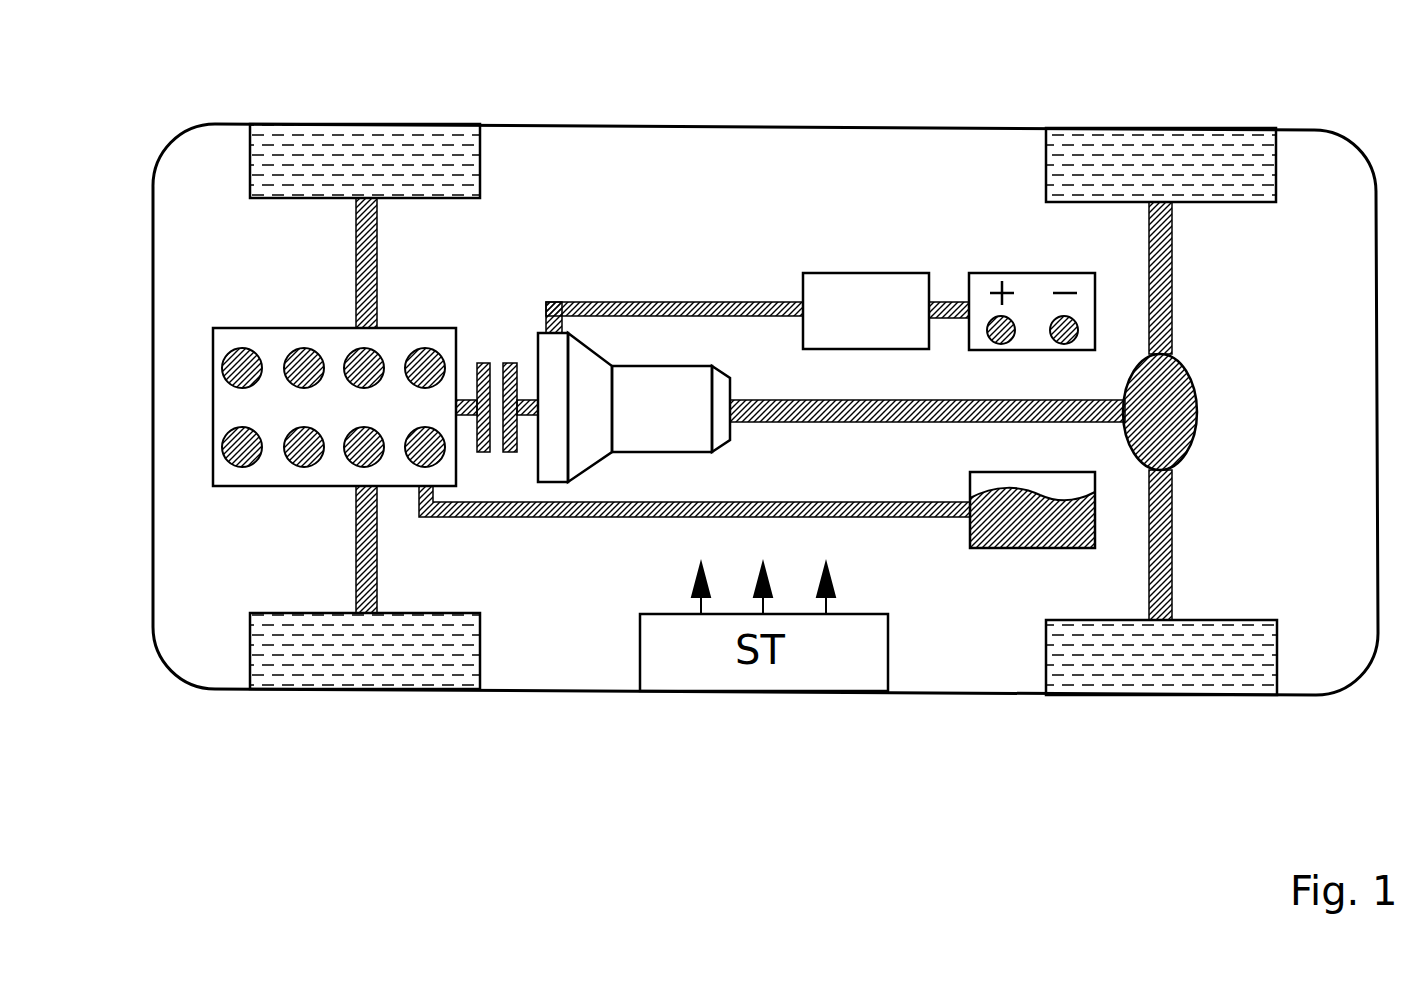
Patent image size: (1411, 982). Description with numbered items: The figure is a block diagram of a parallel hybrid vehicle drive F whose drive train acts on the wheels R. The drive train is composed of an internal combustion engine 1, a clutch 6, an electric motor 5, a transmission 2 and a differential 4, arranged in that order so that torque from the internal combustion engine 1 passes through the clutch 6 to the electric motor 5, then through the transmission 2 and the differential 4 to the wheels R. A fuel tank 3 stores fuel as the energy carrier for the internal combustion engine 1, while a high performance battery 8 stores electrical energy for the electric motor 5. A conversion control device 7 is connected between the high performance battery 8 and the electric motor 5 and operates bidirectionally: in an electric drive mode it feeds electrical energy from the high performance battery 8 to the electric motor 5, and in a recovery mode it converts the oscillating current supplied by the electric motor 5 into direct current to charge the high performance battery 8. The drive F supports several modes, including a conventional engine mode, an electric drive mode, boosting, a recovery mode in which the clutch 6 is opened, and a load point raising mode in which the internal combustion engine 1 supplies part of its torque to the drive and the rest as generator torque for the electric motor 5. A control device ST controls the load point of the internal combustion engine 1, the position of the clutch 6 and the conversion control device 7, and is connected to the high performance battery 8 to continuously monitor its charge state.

The internal combustion engine 1 is at (262, 343).
The transmission 2 is at (658, 397).
The fuel tank 3 is at (985, 478).
The differential 4 is at (1196, 410).
The electric motor 5 is at (551, 349).
The clutch 6 is at (497, 345).
The conversion control device 7 is at (838, 273).
The high performance battery 8 is at (985, 273).
The wheels R is at (313, 135).
The parallel hybrid vehicle drive F is at (1345, 142).